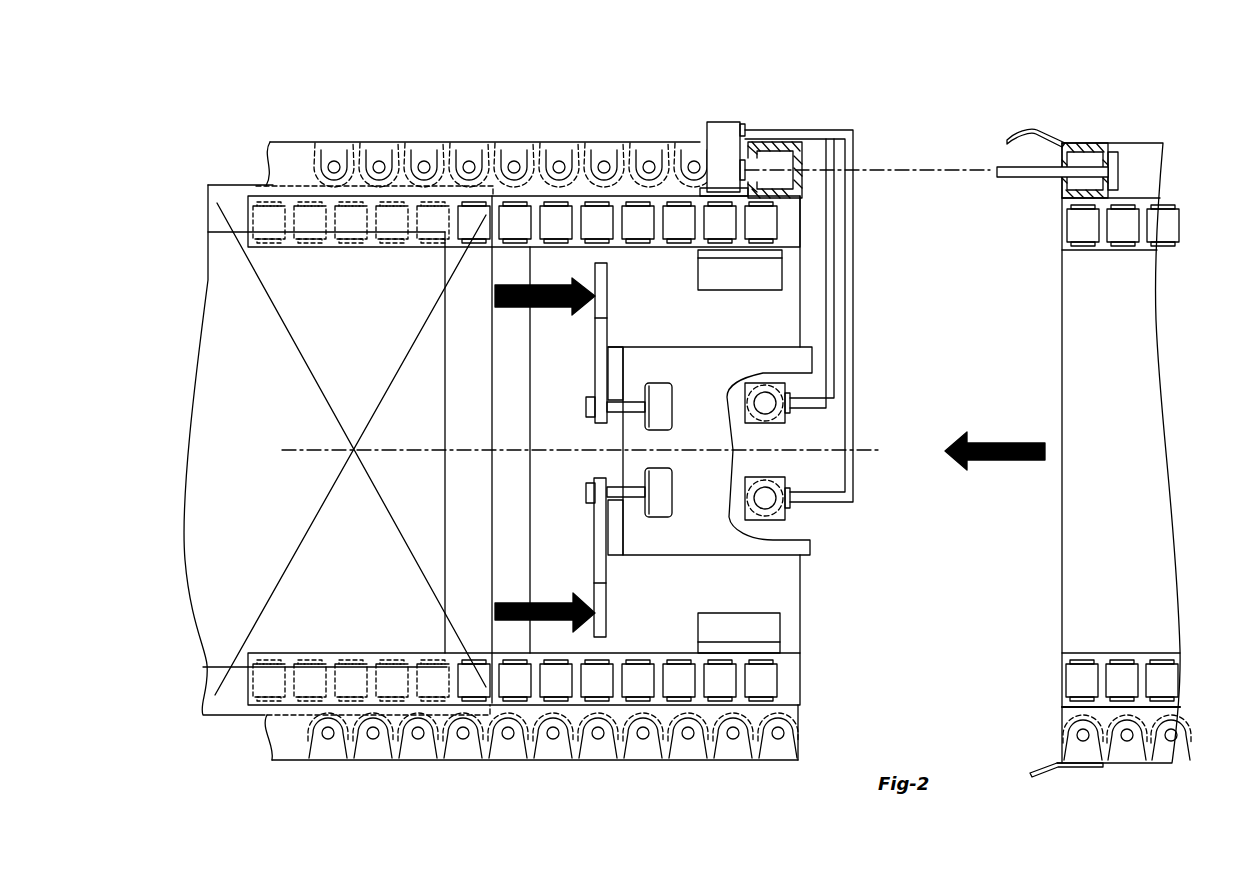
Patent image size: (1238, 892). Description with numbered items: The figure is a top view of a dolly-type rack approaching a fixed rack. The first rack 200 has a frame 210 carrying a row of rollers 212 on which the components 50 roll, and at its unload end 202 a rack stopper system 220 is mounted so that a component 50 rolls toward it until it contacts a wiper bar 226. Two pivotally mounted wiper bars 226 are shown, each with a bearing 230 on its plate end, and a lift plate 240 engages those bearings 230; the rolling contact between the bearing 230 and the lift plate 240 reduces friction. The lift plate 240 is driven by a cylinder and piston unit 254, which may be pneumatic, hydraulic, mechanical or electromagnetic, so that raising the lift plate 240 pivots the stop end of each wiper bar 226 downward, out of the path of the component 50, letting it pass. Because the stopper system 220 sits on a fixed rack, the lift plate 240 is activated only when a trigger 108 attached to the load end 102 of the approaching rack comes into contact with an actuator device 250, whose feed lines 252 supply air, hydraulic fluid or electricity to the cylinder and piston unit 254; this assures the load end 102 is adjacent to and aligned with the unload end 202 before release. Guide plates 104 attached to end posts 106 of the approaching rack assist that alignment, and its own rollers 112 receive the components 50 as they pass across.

The component 50 is at (227, 376).
The load end 102 is at (1144, 132).
The guide plate 104 is at (1032, 133).
The end post 106 is at (1088, 145).
The trigger 108 is at (1008, 178).
The roller 112 is at (1128, 225).
The first rack 200 is at (430, 110).
The unload end 202 is at (690, 138).
The frame 210 is at (287, 142).
The roller 212 is at (548, 150).
The rack stopper system 220 is at (578, 378).
The wiper bar 226 is at (600, 337).
The bearing 230 is at (660, 390).
The lift plate 240 is at (713, 373).
The actuator device 250 is at (730, 118).
The feed line 252 is at (818, 133).
The cylinder and piston unit 254 is at (747, 400).